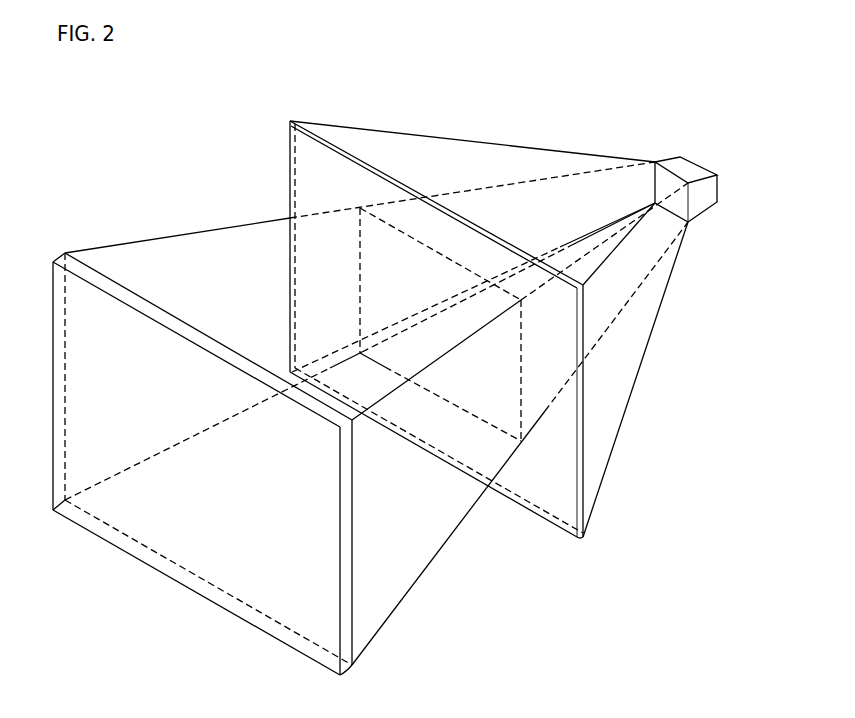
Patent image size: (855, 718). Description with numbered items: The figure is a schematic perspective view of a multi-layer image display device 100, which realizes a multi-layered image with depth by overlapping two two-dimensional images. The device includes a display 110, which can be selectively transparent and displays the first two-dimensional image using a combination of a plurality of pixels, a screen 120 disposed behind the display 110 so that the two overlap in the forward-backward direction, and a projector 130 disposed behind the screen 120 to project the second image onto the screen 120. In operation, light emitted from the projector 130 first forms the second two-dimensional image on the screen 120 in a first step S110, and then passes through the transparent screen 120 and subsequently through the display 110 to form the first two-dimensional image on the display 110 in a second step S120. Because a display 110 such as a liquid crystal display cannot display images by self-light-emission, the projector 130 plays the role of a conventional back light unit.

The multi-layer image display device 100 is at (577, 104).
The display 110 is at (356, 562).
The screen 120 is at (585, 412).
The projector 130 is at (703, 212).
The step of forming the second two-dimensional image on the screen S110 is at (470, 140).
The step of forming the first two-dimensional image on the display S120 is at (210, 230).